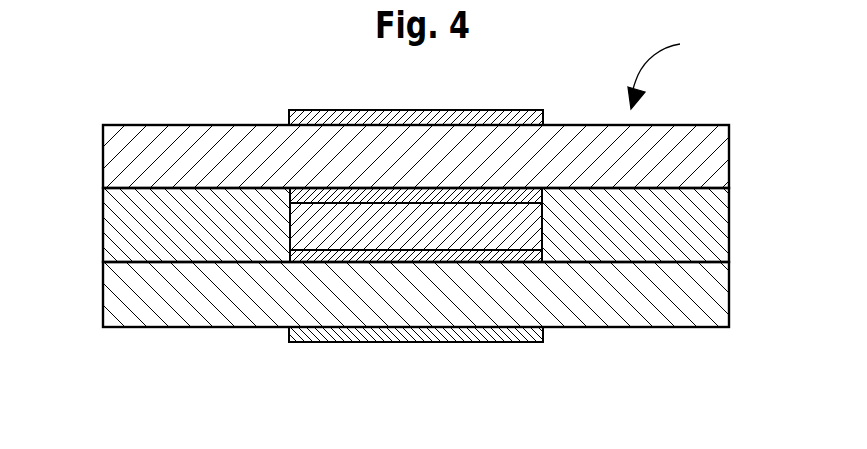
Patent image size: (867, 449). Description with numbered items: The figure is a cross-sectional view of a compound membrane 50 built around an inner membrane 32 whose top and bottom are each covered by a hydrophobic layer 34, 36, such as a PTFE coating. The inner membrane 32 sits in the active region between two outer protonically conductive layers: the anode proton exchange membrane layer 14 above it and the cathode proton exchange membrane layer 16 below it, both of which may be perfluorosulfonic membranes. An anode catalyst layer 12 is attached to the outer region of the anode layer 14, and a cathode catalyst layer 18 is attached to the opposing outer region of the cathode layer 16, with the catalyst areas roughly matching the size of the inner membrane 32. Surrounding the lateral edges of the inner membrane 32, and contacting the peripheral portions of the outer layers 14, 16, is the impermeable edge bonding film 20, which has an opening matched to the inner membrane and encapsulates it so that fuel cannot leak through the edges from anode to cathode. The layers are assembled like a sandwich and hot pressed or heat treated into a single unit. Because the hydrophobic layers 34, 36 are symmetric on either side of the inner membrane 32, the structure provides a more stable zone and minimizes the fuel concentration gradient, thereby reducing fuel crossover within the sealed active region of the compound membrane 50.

The compound membrane 50 is at (669, 68).
The anode catalyst layer 12 is at (447, 110).
The cathode catalyst layer 18 is at (480, 343).
The anode proton exchange membrane layer 14 is at (712, 158).
The cathode proton exchange membrane layer 16 is at (707, 317).
The impermeable edge bonding film 20 is at (102, 205).
The inner membrane 32 is at (428, 233).
The upper contact layer 34 is at (310, 186).
The lower contact layer 36 is at (363, 260).